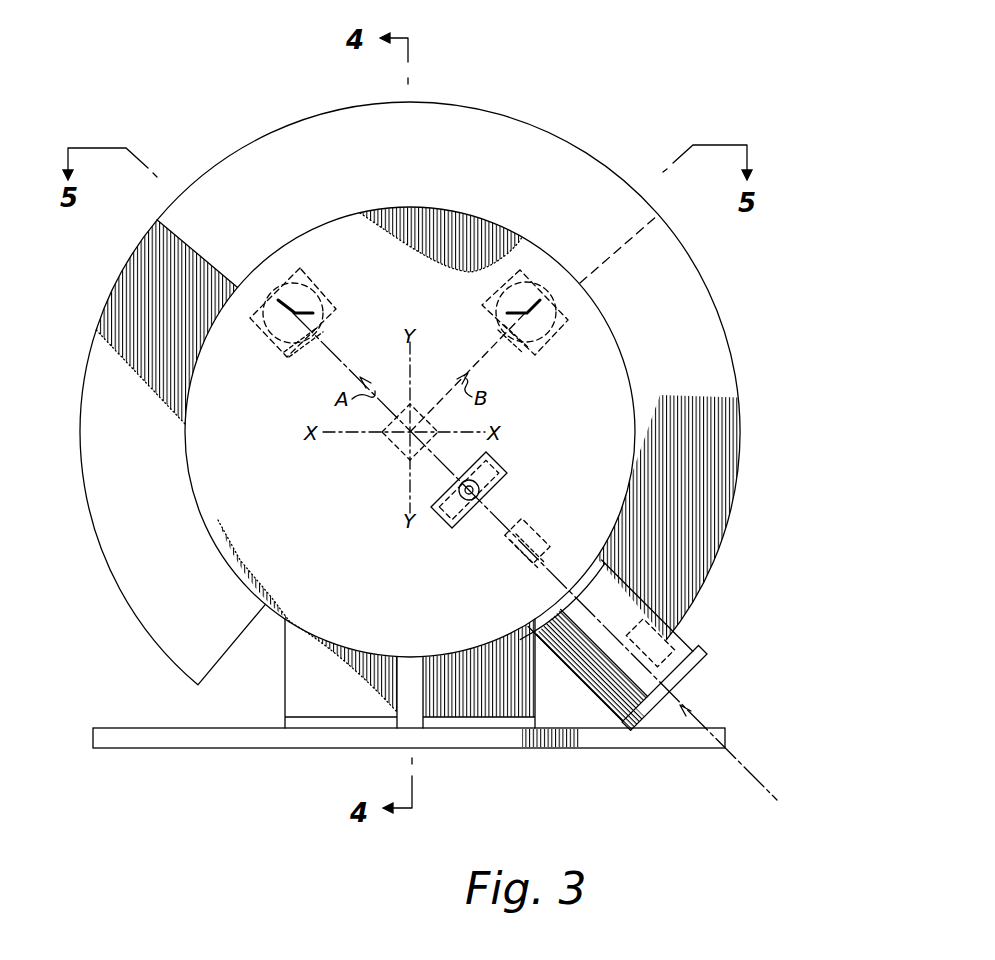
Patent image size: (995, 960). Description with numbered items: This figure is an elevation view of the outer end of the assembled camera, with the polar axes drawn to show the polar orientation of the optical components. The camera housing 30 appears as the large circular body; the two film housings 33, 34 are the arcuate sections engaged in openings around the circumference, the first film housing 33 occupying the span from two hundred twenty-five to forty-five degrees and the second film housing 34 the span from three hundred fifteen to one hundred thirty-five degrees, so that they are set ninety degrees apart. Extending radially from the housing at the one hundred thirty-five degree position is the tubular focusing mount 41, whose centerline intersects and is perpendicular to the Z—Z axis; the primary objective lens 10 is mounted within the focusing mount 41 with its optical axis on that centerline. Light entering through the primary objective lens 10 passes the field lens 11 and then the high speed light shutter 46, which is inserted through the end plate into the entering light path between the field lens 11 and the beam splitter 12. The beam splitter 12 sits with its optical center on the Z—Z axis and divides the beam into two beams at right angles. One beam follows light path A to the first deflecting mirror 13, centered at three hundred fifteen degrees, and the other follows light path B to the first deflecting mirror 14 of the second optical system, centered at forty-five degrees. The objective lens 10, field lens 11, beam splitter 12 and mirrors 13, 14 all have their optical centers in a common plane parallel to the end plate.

The primary objective lens 10 is at (608, 654).
The field lens 11 is at (538, 526).
The beam splitter 12 is at (405, 452).
The first deflecting mirror 13 is at (283, 352).
The first deflecting mirror of the second optical system 14 is at (546, 338).
The camera housing 30 is at (335, 541).
The first film housing 33 is at (150, 484).
The second film housing 34 is at (696, 401).
The tubular focusing mount 41 is at (668, 652).
The high speed light shutter 46 is at (505, 470).